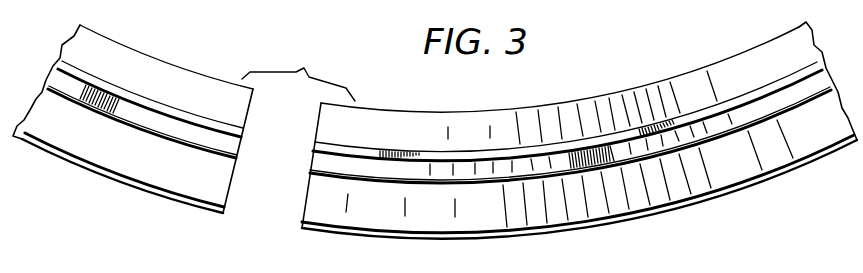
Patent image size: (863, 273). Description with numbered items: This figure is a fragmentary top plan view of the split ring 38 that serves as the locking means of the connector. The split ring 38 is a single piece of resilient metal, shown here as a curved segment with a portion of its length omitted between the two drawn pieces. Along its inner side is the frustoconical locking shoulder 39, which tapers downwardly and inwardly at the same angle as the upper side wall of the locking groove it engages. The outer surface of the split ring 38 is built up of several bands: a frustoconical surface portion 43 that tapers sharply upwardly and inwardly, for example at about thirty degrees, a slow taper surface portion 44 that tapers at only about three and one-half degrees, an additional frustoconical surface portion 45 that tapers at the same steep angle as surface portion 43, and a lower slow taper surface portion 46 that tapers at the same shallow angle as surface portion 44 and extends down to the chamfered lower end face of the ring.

The resilient metal split ring 38 is at (222, 214).
The frustoconical locking shoulder 39 is at (647, 87).
The frustoconical surface portion 43 is at (668, 137).
The slow taper surface portion 44 is at (602, 166).
The additional frustoconical surface portion 45 is at (713, 172).
The lower slow taper surface portion 46 is at (613, 218).